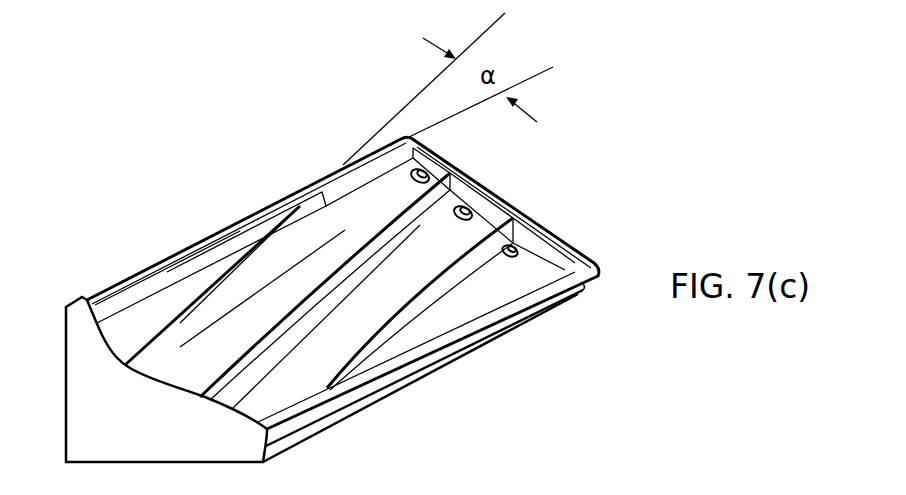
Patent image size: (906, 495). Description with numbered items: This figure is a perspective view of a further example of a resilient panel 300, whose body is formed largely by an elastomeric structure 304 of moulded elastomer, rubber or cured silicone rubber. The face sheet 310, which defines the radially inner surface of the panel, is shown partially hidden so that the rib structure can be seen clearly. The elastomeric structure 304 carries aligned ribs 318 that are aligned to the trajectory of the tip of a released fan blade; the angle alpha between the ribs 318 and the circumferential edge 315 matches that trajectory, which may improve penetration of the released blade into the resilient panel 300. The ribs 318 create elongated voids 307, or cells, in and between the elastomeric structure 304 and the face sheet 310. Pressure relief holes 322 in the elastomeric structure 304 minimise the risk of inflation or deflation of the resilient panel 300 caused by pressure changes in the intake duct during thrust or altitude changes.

The resilient panel 300 is at (302, 164).
The elastomeric structure 304 is at (438, 338).
The voids 307 is at (293, 388).
The face sheet 310 is at (66, 302).
The circumferential edge 315 is at (222, 242).
The aligned ribs 318 is at (180, 337).
The pressure relief holes 322 is at (472, 210).